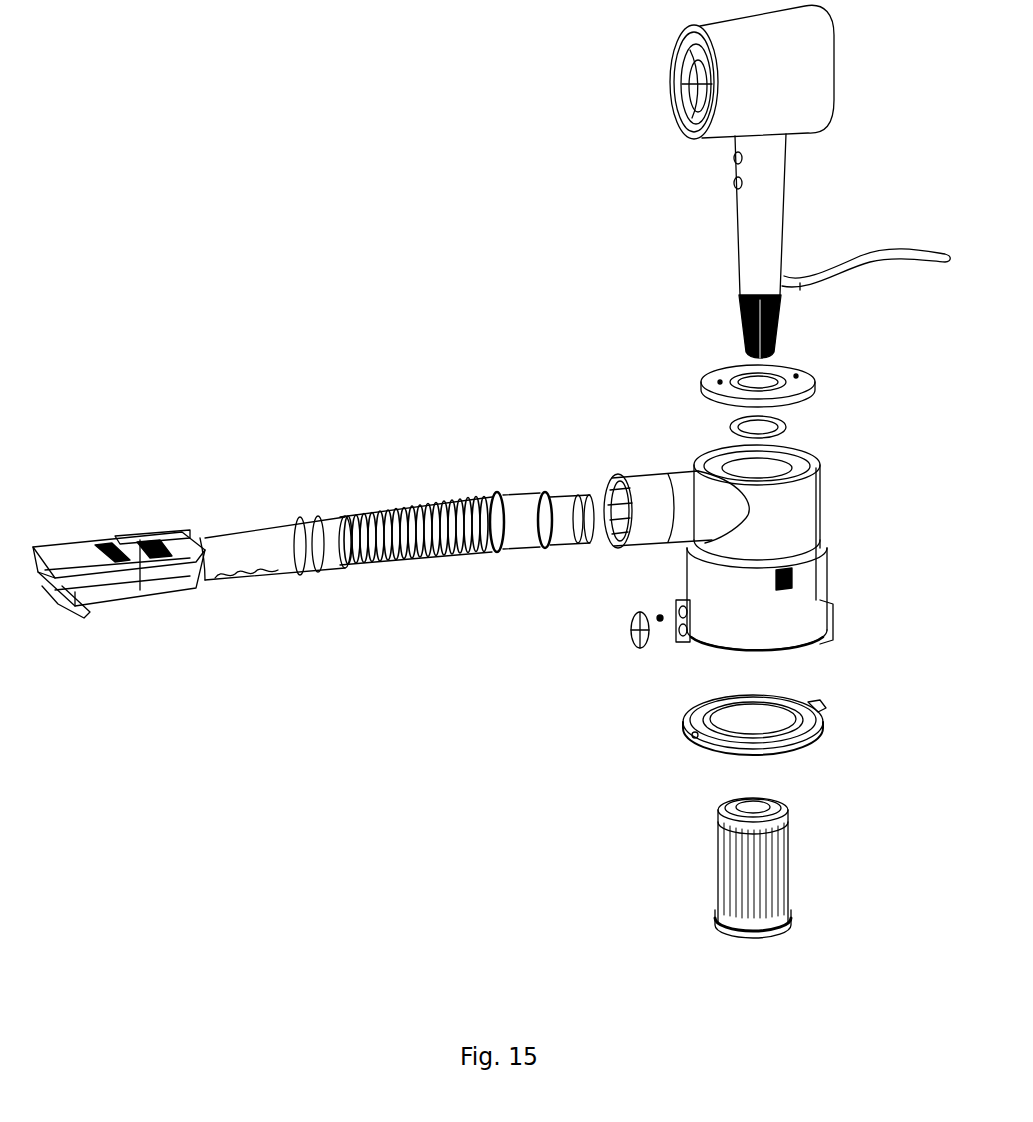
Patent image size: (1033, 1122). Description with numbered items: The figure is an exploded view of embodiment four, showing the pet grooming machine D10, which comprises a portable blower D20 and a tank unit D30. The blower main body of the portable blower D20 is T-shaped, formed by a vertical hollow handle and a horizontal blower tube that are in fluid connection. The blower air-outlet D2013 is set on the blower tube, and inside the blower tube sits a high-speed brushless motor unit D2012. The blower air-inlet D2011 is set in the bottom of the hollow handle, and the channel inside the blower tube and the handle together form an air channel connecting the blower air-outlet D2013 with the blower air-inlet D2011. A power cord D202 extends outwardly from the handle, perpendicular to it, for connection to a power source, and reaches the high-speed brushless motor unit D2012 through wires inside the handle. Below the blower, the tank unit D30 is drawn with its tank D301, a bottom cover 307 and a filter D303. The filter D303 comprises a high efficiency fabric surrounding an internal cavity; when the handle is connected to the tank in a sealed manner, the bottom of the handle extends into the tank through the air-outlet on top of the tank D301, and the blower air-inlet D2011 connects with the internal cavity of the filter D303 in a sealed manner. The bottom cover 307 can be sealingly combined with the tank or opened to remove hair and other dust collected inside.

The pet grooming machine D10 is at (178, 50).
The portable blower D20 is at (673, 192).
The blower air-outlet D2013 is at (672, 58).
The high-speed brushless motor unit D2012 is at (672, 82).
The blower air-inlet D2011 is at (783, 330).
The power cord D202 is at (893, 252).
The tank unit D30 is at (605, 584).
The tank D301 is at (805, 560).
The bottom cover 307 is at (790, 745).
The filter D303 is at (785, 865).